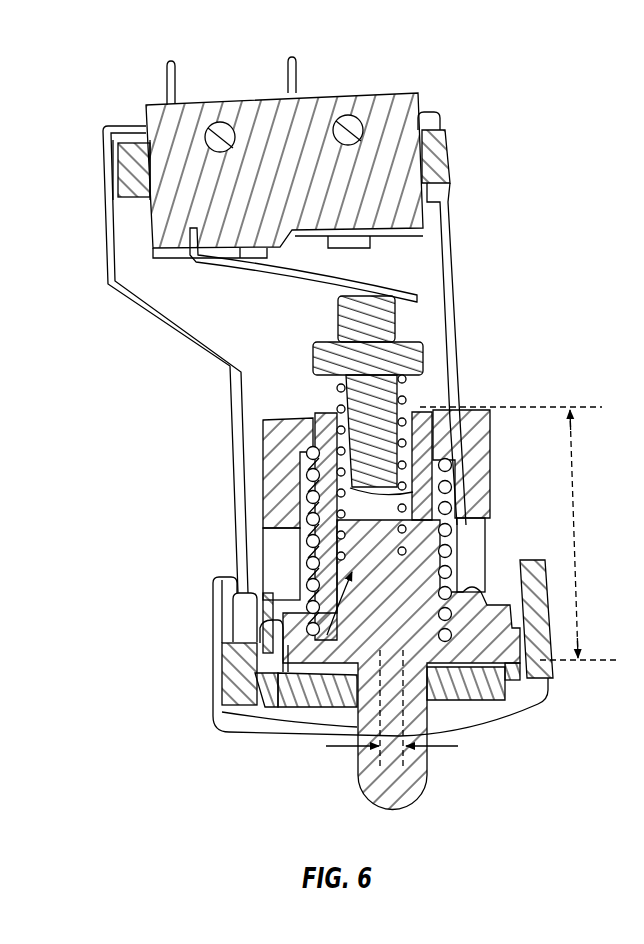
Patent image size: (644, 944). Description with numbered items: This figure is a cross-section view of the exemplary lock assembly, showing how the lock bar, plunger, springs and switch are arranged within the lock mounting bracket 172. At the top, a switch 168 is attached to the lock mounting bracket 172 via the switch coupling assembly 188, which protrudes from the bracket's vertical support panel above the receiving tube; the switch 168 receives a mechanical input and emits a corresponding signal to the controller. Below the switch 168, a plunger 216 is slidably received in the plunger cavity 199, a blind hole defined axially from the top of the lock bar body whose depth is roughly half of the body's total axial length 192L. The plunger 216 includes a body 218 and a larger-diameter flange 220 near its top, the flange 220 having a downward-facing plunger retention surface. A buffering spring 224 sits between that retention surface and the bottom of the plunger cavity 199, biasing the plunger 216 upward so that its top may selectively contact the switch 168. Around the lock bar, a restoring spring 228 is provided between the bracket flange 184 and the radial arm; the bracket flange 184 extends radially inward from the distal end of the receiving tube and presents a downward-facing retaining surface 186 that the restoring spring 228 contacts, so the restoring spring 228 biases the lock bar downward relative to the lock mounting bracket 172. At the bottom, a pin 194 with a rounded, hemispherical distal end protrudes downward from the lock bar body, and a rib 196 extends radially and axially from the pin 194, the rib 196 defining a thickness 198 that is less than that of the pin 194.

The switch 168 is at (390, 98).
The lock mounting bracket 172 is at (180, 333).
The switch coupling assembly 188 is at (465, 150).
The plunger 216 is at (272, 329).
The body 218 is at (383, 323).
The flange 220 is at (418, 356).
The buffering spring 224 is at (408, 403).
The bracket flange 184 is at (337, 414).
The retaining surface 186 is at (294, 458).
The restoring spring 228 is at (308, 583).
The plunger cavity 199 is at (327, 635).
The rib 196 is at (422, 712).
The thickness 198 is at (437, 748).
The pin 194 is at (363, 787).
The total axial length 192L is at (575, 532).